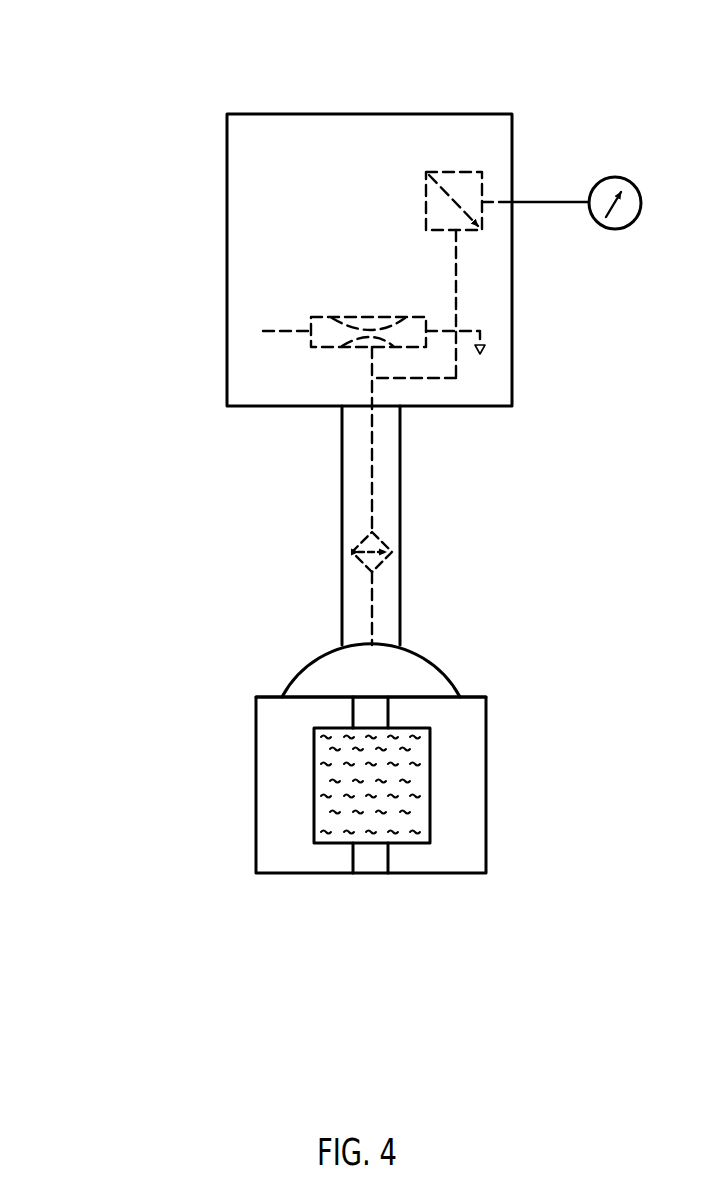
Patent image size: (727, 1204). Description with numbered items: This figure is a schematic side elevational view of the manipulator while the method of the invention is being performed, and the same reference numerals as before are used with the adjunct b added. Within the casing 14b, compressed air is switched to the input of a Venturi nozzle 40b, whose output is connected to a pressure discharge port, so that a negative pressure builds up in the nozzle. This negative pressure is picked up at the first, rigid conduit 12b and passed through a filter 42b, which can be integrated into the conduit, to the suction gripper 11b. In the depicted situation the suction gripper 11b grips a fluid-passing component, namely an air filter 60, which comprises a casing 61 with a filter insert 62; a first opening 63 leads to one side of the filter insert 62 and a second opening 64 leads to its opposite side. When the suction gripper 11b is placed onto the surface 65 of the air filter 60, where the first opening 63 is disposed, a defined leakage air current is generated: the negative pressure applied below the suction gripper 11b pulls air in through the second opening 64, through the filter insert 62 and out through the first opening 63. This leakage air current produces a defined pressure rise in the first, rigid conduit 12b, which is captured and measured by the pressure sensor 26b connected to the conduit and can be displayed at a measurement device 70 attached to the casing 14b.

The casing 14b is at (369, 205).
The pressure sensor 26b is at (453, 175).
The measurement device 70 is at (608, 177).
The Venturi nozzle 40b is at (365, 325).
The first, rigid conduit 12b is at (371, 460).
The filter 42b is at (361, 548).
The suction gripper 11b is at (440, 683).
The air filter 60 is at (365, 754).
The casing 61 is at (475, 797).
The filter insert 62 is at (417, 827).
The first opening 63 is at (370, 702).
The second opening 64 is at (367, 865).
The surface 65 is at (268, 694).